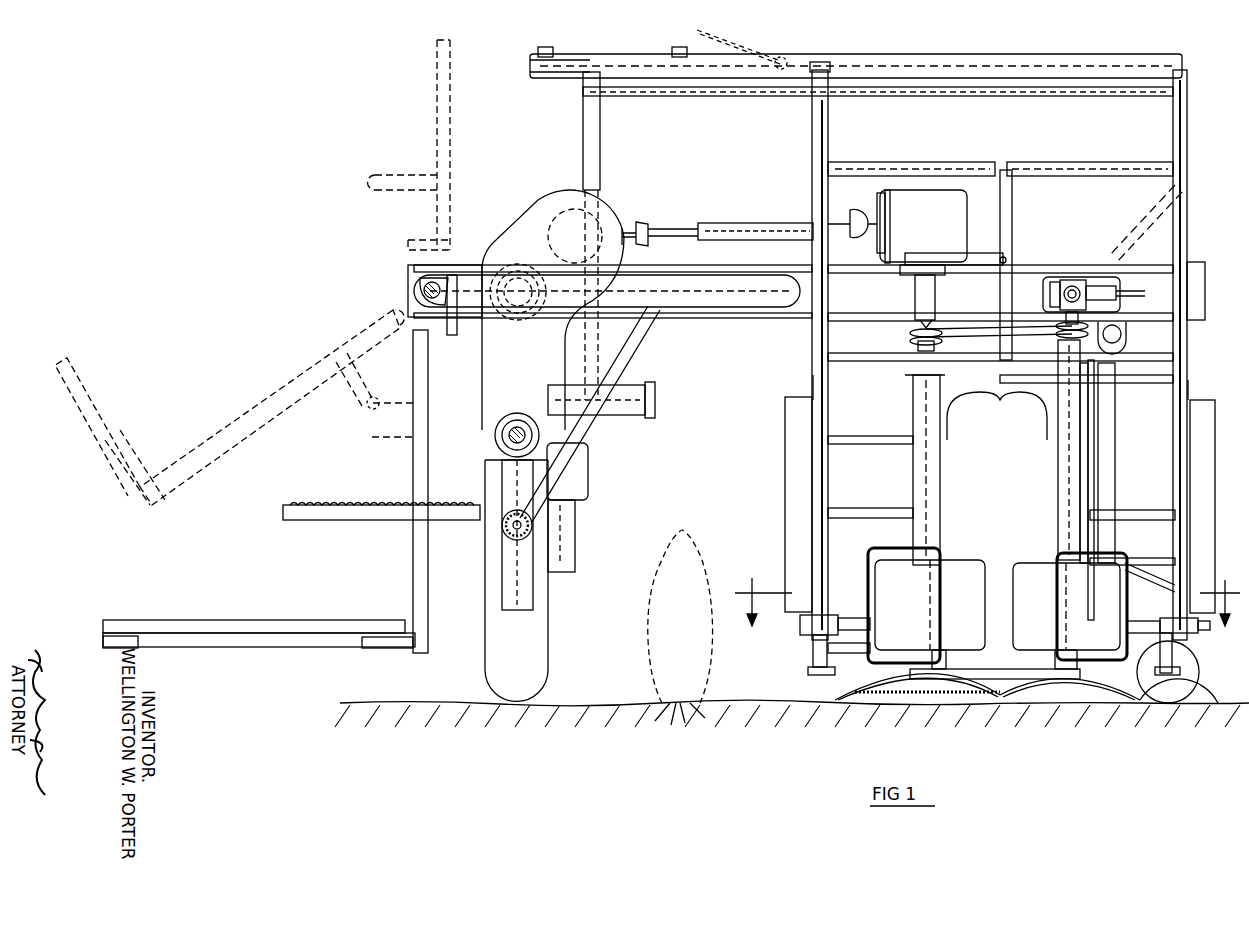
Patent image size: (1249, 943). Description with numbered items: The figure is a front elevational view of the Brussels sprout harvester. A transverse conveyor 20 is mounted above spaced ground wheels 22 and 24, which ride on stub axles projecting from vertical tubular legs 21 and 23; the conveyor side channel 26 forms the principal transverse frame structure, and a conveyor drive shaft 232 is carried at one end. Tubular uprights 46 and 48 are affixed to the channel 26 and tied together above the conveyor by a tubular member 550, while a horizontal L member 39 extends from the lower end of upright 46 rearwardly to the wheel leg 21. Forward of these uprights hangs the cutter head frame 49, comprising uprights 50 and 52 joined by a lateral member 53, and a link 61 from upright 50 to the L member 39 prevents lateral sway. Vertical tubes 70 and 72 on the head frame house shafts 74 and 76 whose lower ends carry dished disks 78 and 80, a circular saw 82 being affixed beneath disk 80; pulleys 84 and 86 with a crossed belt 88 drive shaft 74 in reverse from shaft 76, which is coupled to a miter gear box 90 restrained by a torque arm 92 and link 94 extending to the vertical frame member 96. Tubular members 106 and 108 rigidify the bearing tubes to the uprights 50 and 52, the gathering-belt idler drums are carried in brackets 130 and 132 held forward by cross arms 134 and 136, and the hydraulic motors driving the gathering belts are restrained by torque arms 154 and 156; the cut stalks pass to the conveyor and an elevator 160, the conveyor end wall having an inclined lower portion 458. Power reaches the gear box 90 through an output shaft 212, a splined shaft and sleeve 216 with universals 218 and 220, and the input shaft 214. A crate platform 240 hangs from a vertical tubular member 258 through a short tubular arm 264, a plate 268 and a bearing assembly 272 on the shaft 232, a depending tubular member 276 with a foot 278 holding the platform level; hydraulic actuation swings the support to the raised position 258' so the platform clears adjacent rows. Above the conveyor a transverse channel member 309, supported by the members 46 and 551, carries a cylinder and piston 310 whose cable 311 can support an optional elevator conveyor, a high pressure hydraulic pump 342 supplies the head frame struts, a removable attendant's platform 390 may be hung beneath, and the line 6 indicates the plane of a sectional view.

The section line 6- 6 is at (987, 590).
The transverse conveyor 20 is at (762, 318).
The vertical tubular leg 21 is at (1100, 482).
The ground wheel 22 is at (1160, 690).
The vertical tubular leg 23 is at (577, 550).
The ground wheel 24 is at (540, 625).
The side channel 26 is at (802, 310).
The L member 39 is at (1148, 558).
The tubular upright 46 is at (1172, 118).
The tubular upright 48 is at (828, 128).
The cutter head frame 49 is at (1198, 414).
The tubular upright 50 is at (1188, 382).
The tubular upright 52 is at (814, 375).
The lateral member 53 is at (1135, 348).
The link 61 is at (1165, 578).
The vertical tube 70 is at (1070, 462).
The vertical tube 72 is at (932, 478).
The vertical shaft 74 is at (1060, 326).
The vertical shaft 76 is at (910, 333).
The dished circular disk 78 is at (1060, 680).
The dished circular disk 80 is at (938, 685).
The circular saw 82 is at (870, 690).
The pulley 84 is at (1092, 345).
The pulley 86 is at (910, 360).
The crossed belt 88 is at (975, 325).
The miter gear box 90 is at (926, 190).
The torque arm 92 is at (1005, 255).
The link 94 is at (1010, 260).
The vertical frame member 96 is at (1012, 200).
The tubular member 106 is at (1143, 510).
The tubular member 108 is at (860, 505).
The bracket 130 is at (1110, 685).
The bracket 132 is at (850, 665).
The cross arm 134 is at (1185, 650).
The cross arm 136 is at (865, 600).
The torque arm 154 is at (1078, 440).
The torque arm 156 is at (830, 422).
The elevator 160 is at (995, 675).
The output shaft 212 is at (636, 222).
The input shaft 214 is at (850, 220).
The splined shaft and sleeve 216 is at (690, 230).
The universal 218 is at (650, 230).
The universal 220 is at (830, 222).
The conveyor drive shaft 232 is at (420, 280).
The platform 240 is at (283, 620).
The vertical tubular member 258 is at (390, 243).
The raised position of member 258 258' is at (229, 407).
The short tubular arm 264 is at (448, 335).
The plate 268 is at (474, 300).
The bearing assembly 272 is at (424, 290).
The depending tubular member 276 is at (413, 552).
The foot 278 is at (397, 645).
The transverse channel member 309 is at (980, 60).
The cylinder and piston 310 is at (605, 55).
The cable 311 is at (738, 60).
The high pressure hydraulic pump 342 is at (580, 478).
The removable platform for an attendant 390 is at (365, 505).
The inclined lower portion 458 is at (1165, 250).
The tubular member 550 is at (902, 80).
The member 551 is at (1055, 170).